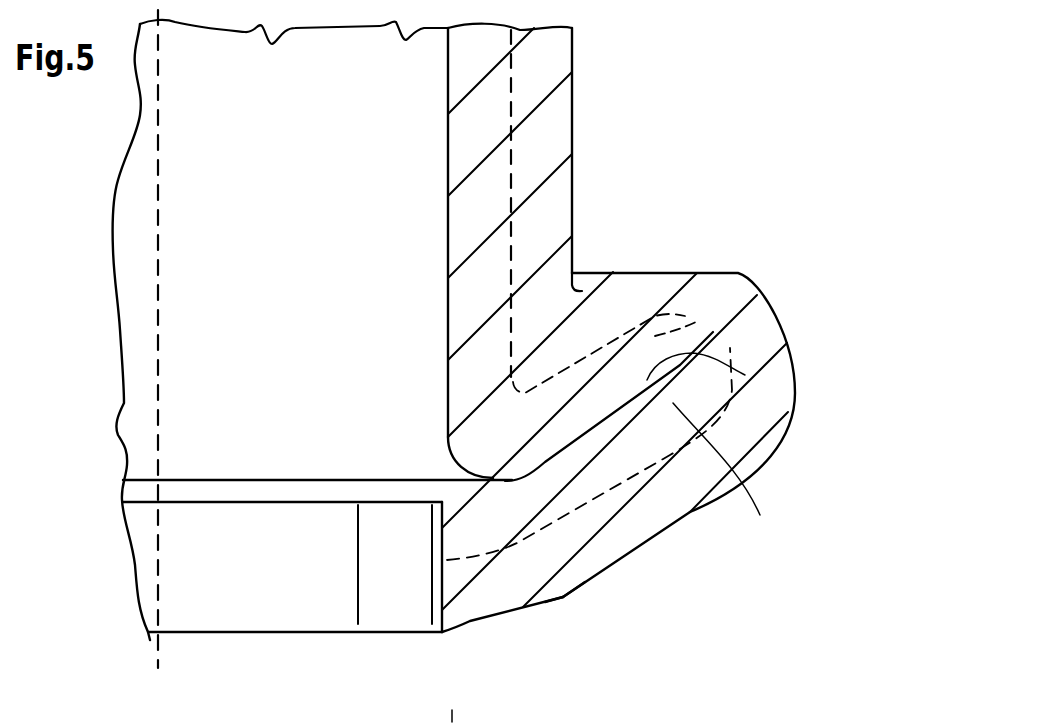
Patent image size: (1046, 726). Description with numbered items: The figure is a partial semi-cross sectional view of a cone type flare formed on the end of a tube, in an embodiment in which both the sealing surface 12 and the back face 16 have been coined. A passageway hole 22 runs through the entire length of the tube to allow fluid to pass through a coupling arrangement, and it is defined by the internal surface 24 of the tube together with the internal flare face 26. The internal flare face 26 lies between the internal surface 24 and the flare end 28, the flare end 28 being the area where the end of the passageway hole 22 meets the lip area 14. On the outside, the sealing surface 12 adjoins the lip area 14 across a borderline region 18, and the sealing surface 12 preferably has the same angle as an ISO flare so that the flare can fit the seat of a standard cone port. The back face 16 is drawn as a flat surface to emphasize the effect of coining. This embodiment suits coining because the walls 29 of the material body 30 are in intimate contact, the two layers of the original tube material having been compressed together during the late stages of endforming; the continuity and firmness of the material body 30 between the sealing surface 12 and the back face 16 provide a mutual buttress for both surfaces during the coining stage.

The sealing surface 12 is at (635, 552).
The lip area 14 is at (489, 620).
The back face 16 is at (655, 272).
The borderline region 18 is at (565, 600).
The passageway hole 22 is at (323, 198).
The internal surface 24 is at (450, 146).
The internal flare face 26 is at (404, 480).
The flare end 28 is at (442, 633).
The walls 29 is at (745, 375).
The material body 30 is at (697, 324).